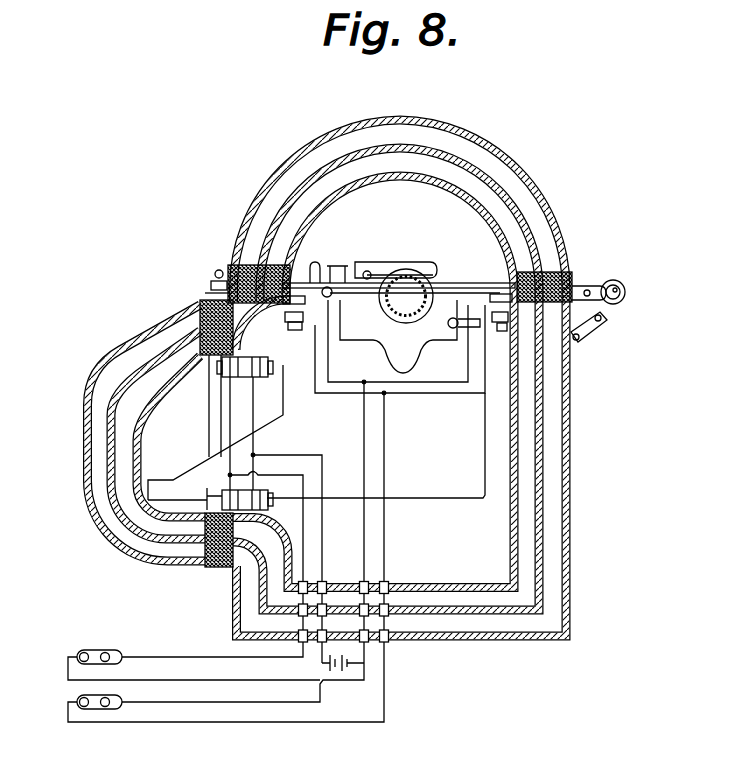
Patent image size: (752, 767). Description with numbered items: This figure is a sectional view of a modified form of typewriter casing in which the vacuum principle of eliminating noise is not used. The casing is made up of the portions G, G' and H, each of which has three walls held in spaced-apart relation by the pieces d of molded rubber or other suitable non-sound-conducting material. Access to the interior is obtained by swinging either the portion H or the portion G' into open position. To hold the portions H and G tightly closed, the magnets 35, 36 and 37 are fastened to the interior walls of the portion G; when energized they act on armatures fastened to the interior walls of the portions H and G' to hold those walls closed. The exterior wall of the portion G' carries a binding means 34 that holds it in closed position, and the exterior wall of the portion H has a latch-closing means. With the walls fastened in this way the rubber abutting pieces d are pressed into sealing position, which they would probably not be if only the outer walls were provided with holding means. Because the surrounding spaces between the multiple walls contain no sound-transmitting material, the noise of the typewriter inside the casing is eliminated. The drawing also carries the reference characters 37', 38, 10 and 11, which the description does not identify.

The casing portion G' is at (401, 197).
The casing portion G is at (436, 463).
The casing portion H is at (135, 462).
The non-sound-conducting material pieces d is at (244, 263).
The binding means 34 is at (215, 289).
The magnet 35 is at (497, 305).
The magnet 36 is at (272, 348).
The magnet 37 is at (255, 510).
The terminal device 37' is at (119, 643).
The terminal device 38 is at (116, 696).
The knob and linkage 10 is at (622, 284).
The wire 11 is at (460, 456).